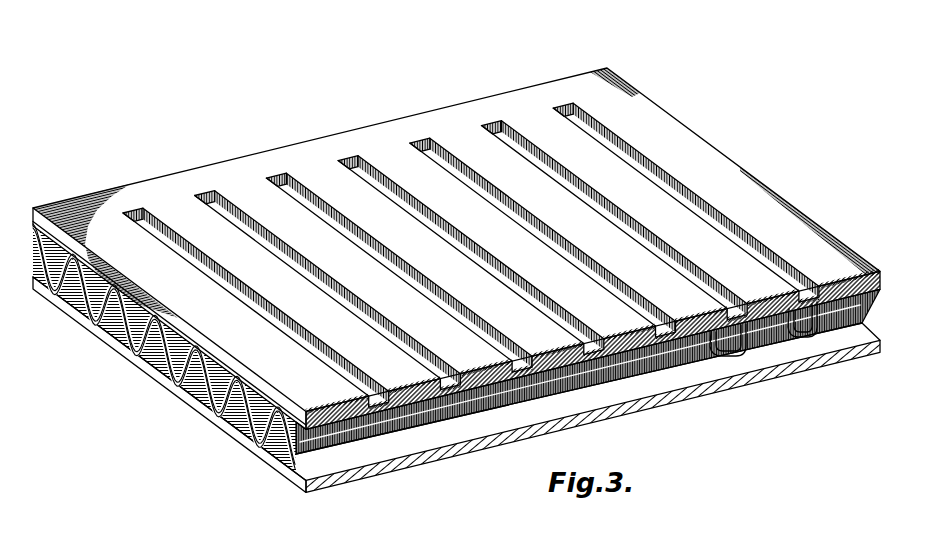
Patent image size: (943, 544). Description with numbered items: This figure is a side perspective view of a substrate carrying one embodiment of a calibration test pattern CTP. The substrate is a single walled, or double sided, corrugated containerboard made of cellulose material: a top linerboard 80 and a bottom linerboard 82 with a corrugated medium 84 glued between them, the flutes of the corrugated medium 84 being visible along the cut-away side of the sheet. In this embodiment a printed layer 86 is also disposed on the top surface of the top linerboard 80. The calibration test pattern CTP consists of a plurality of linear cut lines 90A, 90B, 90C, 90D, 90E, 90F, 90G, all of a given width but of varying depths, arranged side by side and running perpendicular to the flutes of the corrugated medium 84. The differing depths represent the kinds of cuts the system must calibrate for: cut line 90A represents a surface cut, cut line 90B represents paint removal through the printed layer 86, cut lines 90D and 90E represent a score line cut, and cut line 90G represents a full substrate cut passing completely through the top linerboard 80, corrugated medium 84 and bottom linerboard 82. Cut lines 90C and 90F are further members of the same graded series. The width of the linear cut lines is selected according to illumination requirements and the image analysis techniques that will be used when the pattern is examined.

The calibration test pattern CTP is at (146, 97).
The top linerboard 80 is at (881, 283).
The bottom linerboard 82 is at (323, 481).
The corrugated medium 84 is at (364, 447).
The printed layer 86 is at (861, 263).
The cut line 90A is at (153, 220).
The cut line 90B is at (226, 198).
The linear cut line 90C is at (292, 178).
The cut line 90D is at (366, 160).
The cut line 90E is at (440, 146).
The linear cut line 90F is at (511, 128).
The cut line 90G is at (581, 110).